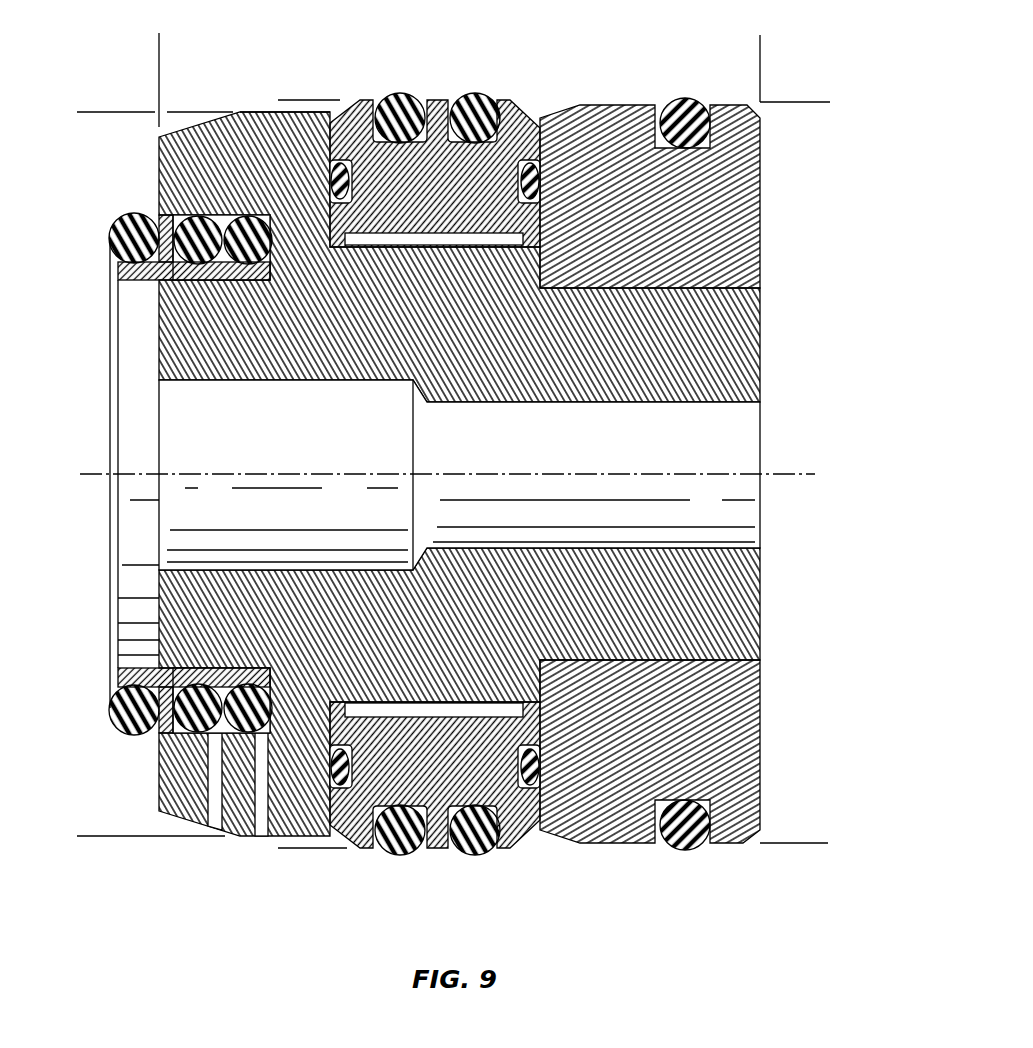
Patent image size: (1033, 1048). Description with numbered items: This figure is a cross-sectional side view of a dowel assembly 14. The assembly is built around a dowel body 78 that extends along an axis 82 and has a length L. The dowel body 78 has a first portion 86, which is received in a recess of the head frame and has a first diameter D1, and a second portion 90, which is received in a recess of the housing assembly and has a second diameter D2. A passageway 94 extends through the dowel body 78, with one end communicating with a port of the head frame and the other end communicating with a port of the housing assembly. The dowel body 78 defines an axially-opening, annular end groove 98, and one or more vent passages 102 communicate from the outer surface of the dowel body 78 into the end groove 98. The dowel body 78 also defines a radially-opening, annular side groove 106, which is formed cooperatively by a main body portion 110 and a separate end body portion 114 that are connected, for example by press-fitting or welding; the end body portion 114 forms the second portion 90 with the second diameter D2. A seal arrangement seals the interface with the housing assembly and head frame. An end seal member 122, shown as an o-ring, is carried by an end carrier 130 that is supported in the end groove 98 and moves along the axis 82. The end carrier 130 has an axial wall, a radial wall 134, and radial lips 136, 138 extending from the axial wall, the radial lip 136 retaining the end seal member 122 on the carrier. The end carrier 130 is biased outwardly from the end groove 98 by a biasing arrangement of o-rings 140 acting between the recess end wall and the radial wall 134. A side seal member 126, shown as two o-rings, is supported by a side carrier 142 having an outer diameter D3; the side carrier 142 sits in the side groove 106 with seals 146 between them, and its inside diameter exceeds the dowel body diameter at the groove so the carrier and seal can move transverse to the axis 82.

The dowel assembly 14 is at (82, 171).
The dowel body 78 is at (260, 112).
The axis 82 is at (790, 472).
The first portion 86 is at (270, 80).
The second portion 90 is at (636, 62).
The passageway 94 is at (710, 547).
The end groove 98 is at (232, 667).
The vent passages 102 is at (262, 815).
The side groove 106 is at (523, 128).
The main body portion 110 is at (322, 840).
The end body portion 114 is at (728, 845).
The end seal member 122 is at (117, 737).
The side seal member 126 is at (457, 97).
The end carrier 130 is at (150, 282).
The radial wall 134 is at (170, 733).
The radial lip 136 is at (118, 678).
The radial lip 138 is at (217, 667).
The o-rings 140 is at (253, 262).
The side carrier 142 is at (487, 200).
The seals 146 is at (348, 772).
The first diameter D1 is at (91, 65).
The second diameter D2 is at (813, 60).
The outer diameter D3 is at (303, 55).
The length L is at (118, 52).